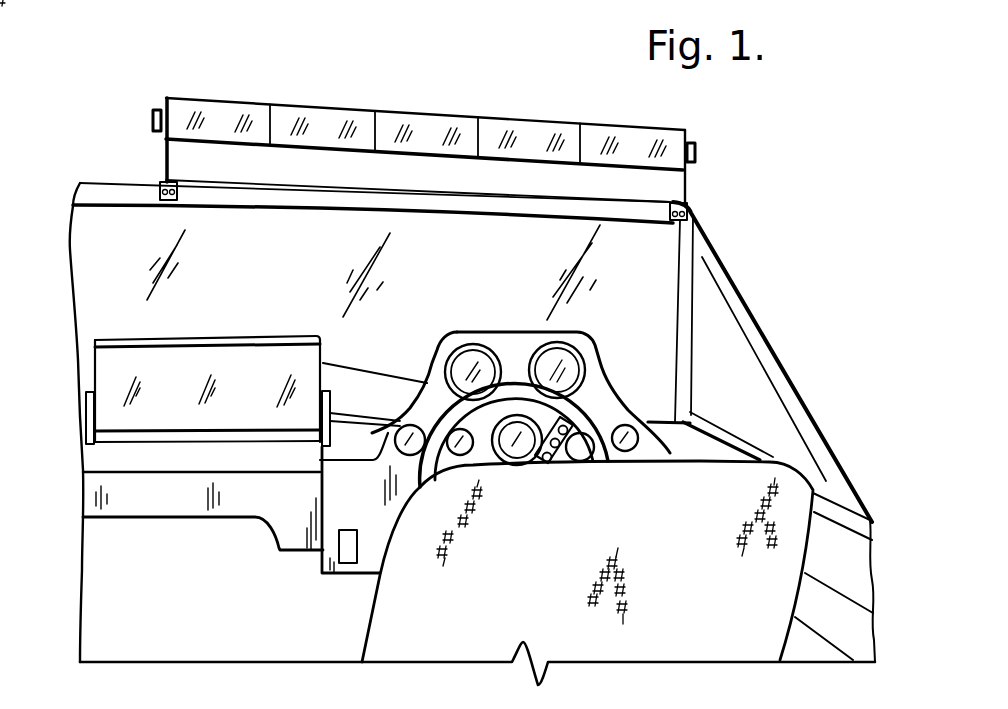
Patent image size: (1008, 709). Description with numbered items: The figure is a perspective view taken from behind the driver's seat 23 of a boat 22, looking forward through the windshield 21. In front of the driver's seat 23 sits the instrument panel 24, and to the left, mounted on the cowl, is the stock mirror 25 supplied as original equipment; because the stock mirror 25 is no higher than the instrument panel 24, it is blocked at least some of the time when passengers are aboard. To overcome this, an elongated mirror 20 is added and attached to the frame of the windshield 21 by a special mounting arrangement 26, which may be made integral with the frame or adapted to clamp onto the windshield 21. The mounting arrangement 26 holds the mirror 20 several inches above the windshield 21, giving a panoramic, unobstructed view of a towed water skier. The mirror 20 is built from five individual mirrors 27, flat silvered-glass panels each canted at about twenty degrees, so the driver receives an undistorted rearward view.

The mirror 20 is at (432, 112).
The windshield 21 is at (72, 238).
The boat 22 is at (780, 290).
The driver's seat 23 is at (820, 486).
The instrument panel 24 is at (470, 332).
The stock mirror 25 is at (274, 336).
The mounting arrangement 26 is at (160, 160).
The individual mirrors 27 is at (283, 112).